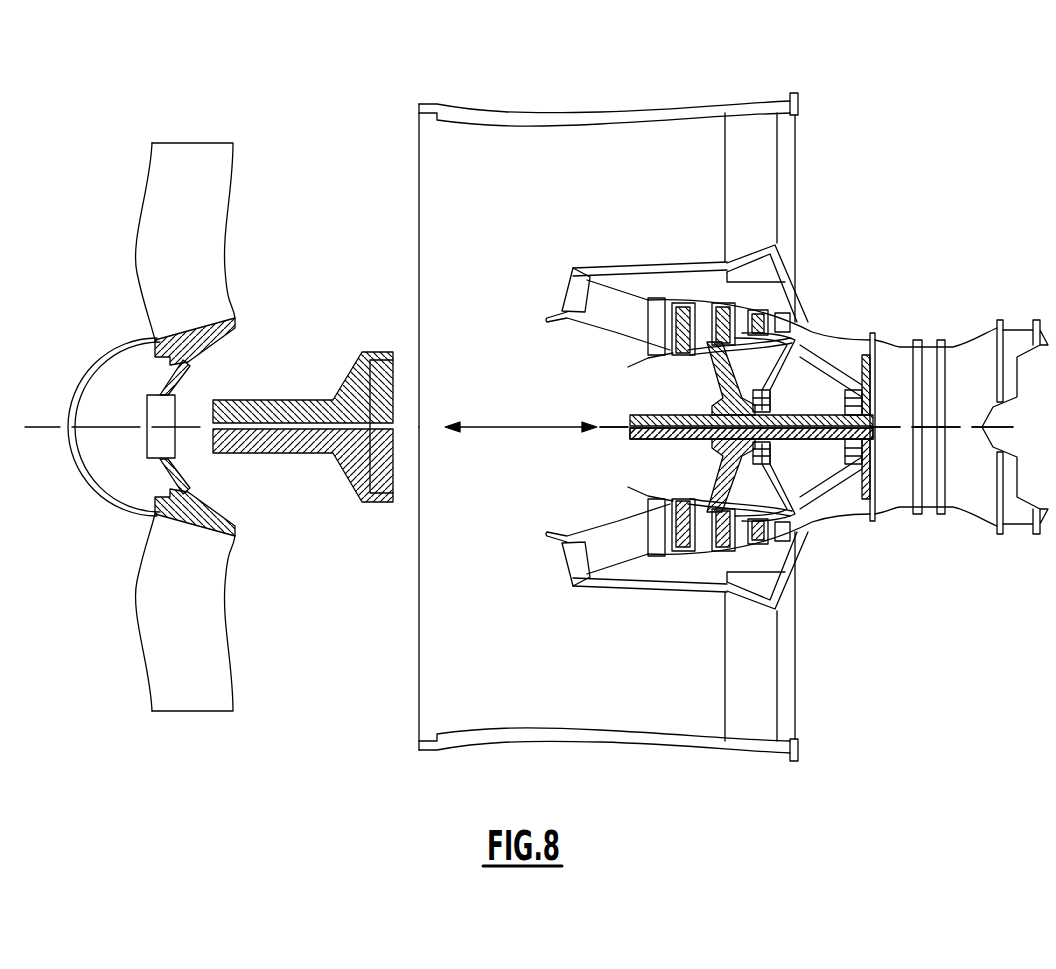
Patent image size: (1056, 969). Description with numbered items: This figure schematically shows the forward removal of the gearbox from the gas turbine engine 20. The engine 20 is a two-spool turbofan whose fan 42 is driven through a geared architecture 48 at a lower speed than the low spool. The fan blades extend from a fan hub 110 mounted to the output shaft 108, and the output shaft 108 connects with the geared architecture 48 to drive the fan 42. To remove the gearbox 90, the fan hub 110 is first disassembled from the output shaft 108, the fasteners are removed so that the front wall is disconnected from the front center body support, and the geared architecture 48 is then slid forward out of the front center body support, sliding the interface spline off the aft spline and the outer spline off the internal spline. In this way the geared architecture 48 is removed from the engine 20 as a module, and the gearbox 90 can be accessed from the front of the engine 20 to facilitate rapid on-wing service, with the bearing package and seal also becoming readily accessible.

The gas turbine engine 20 is at (900, 253).
The fan 42 is at (163, 116).
The geared architecture 48 is at (303, 423).
The gearbox 90 is at (383, 480).
The output shaft 108 is at (277, 448).
The fan hub 110 is at (153, 445).